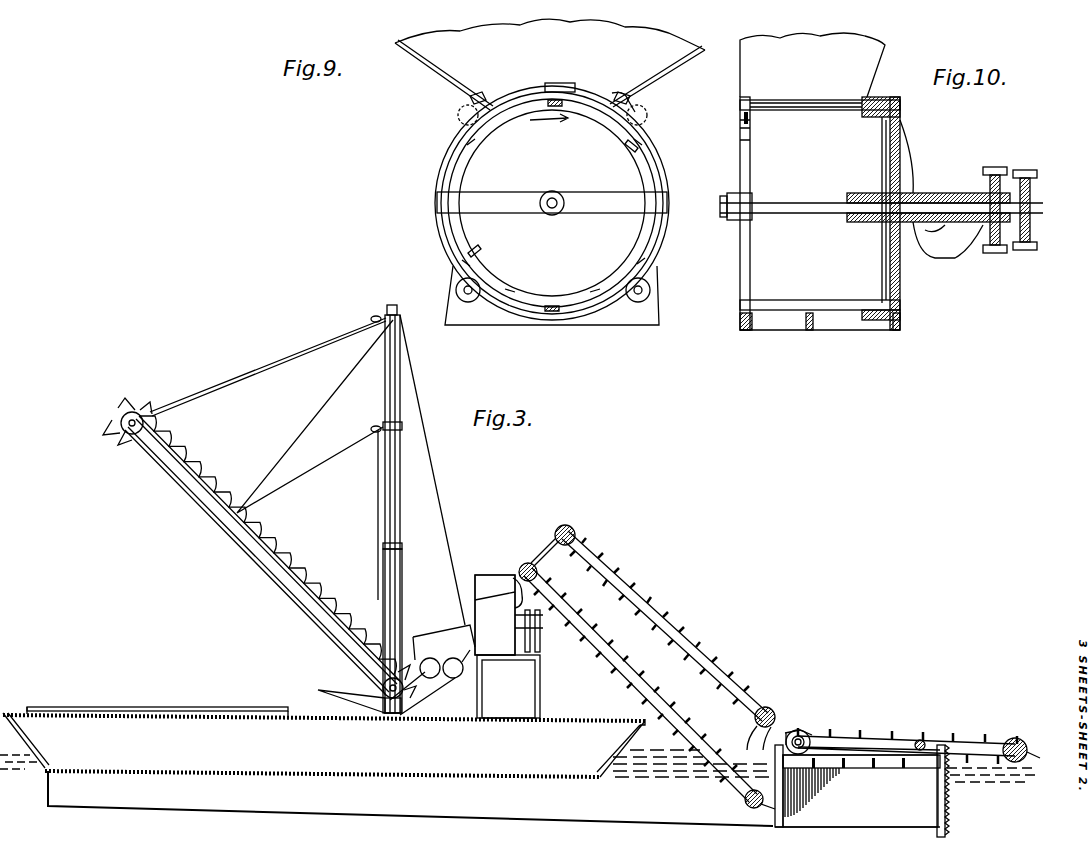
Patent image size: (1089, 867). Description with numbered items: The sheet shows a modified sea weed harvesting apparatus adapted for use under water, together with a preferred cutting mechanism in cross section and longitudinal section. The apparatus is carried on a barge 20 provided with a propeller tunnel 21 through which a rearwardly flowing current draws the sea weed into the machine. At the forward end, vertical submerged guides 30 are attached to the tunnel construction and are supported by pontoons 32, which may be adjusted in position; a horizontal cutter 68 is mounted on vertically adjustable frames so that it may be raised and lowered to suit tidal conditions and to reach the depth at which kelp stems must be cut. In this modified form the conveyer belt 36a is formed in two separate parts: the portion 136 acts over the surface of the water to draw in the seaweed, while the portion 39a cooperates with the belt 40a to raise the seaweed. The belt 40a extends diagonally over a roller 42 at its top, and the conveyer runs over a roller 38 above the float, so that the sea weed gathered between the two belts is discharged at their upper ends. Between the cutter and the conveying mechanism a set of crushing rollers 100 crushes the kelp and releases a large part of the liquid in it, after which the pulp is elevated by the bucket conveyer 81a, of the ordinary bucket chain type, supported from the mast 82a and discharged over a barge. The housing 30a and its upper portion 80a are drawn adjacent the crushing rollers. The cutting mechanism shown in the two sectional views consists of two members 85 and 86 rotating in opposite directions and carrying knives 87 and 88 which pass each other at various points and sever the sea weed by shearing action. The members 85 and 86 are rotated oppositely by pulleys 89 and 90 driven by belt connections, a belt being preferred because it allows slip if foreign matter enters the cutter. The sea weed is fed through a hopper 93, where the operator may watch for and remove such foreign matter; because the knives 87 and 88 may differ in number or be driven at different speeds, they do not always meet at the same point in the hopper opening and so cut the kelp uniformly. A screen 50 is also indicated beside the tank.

In FIG. 9, the hopper 93 is at (550, 64).
In FIG. 9, the knives 87 is at (568, 88).
In FIG. 10, the knives 87 is at (802, 103).
In FIG. 9, the knives 88 is at (634, 153).
In FIG. 10, the knives 88 is at (800, 111).
In FIG. 10, the rotating member 86 is at (888, 145).
In FIG. 10, the rotating member 85 is at (941, 189).
In FIG. 10, the pulley 89 is at (990, 182).
In FIG. 10, the pulley 90 is at (1033, 190).
In FIG. 3, the barge 20 is at (386, 742).
In FIG. 3, the propeller tunnel 21 is at (410, 798).
In FIG. 3, the bucket conveyer 81a is at (256, 591).
In FIG. 3, the mast 82a is at (400, 600).
In FIG. 3, the crushing rollers 100 is at (444, 689).
In FIG. 3, the housing 30a is at (509, 646).
In FIG. 3, the housing 80a is at (487, 580).
In FIG. 3, the roller 42 is at (527, 563).
In FIG. 3, the roller 38 is at (577, 533).
In FIG. 3, the conveyer belt portion 39a is at (670, 633).
In FIG. 3, the belt 40a is at (637, 667).
In FIG. 3, the conveyer belt 36a is at (669, 594).
In FIG. 3, the submerged guides 30 is at (860, 791).
In FIG. 3, the pontoons 32 is at (893, 763).
In FIG. 3, the screen 50 is at (958, 795).
In FIG. 3, the horizontal cutter 68 is at (792, 822).
In FIG. 3, the conveyer belt portion 136 is at (818, 722).